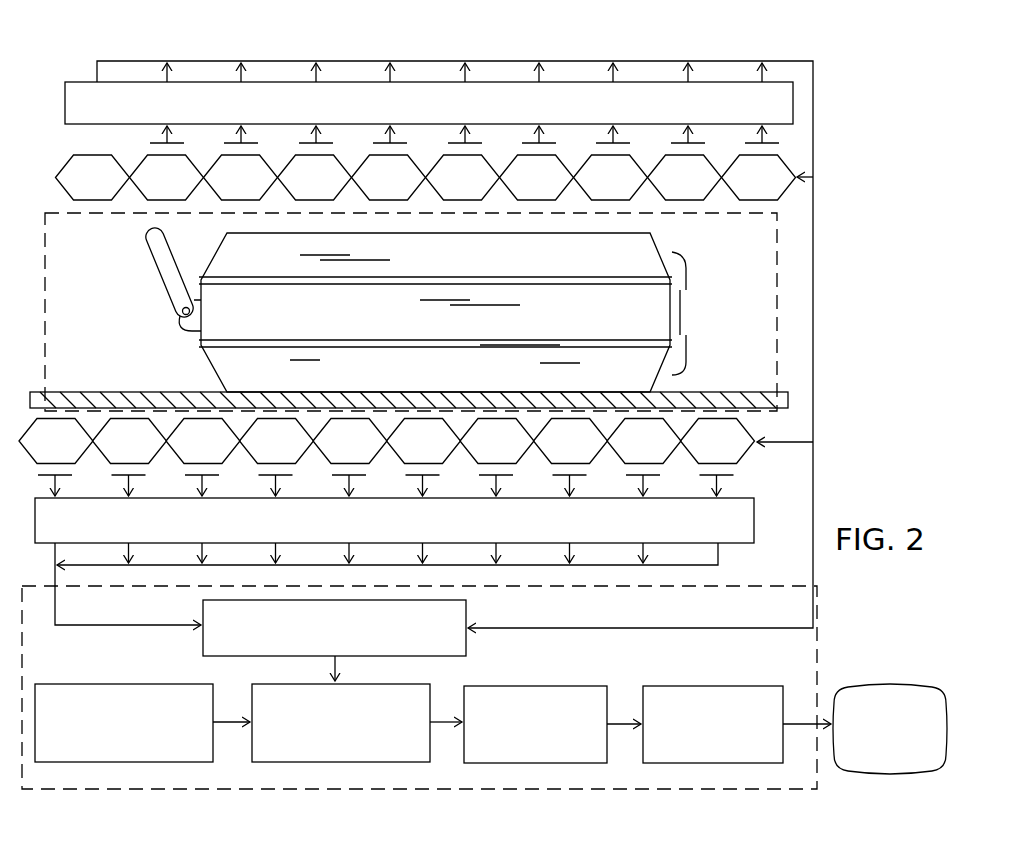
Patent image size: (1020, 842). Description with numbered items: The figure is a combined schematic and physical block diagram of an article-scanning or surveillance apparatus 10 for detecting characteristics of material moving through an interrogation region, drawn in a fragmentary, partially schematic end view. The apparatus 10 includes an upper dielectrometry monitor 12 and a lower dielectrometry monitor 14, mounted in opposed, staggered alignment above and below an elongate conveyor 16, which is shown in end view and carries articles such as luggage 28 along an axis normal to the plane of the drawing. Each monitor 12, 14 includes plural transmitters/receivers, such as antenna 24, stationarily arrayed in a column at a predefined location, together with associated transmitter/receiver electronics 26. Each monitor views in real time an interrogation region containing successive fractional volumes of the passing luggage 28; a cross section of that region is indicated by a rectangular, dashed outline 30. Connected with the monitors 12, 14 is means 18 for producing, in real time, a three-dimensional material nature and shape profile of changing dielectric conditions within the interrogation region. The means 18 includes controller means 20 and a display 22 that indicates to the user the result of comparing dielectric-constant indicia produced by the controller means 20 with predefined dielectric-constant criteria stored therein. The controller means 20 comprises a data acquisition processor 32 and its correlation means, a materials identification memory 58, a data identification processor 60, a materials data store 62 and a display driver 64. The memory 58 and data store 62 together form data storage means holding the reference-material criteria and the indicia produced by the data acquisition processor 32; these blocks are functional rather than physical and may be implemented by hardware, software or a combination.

The article-scanning or surveillance apparatus 10 is at (850, 21).
The upper dielectrometry monitor 12 is at (805, 152).
The lower dielectrometry monitor 14 is at (786, 473).
The elongate conveyor 16 is at (712, 392).
The means for producing a three-dimensional material nature and shape profile 18 is at (849, 660).
The controller means 20 is at (750, 790).
The display 22 is at (900, 683).
The antenna 24 is at (783, 195).
The transmitter/receiver electronics 26 is at (793, 110).
The luggage 28 is at (657, 242).
The rectangular dashed outline 30 is at (777, 318).
The data acquisition processor 32 is at (466, 650).
The materials identification memory 58 is at (106, 684).
The data identification processor 60 is at (278, 684).
The materials data store 62 is at (577, 686).
The display driver 64 is at (745, 686).